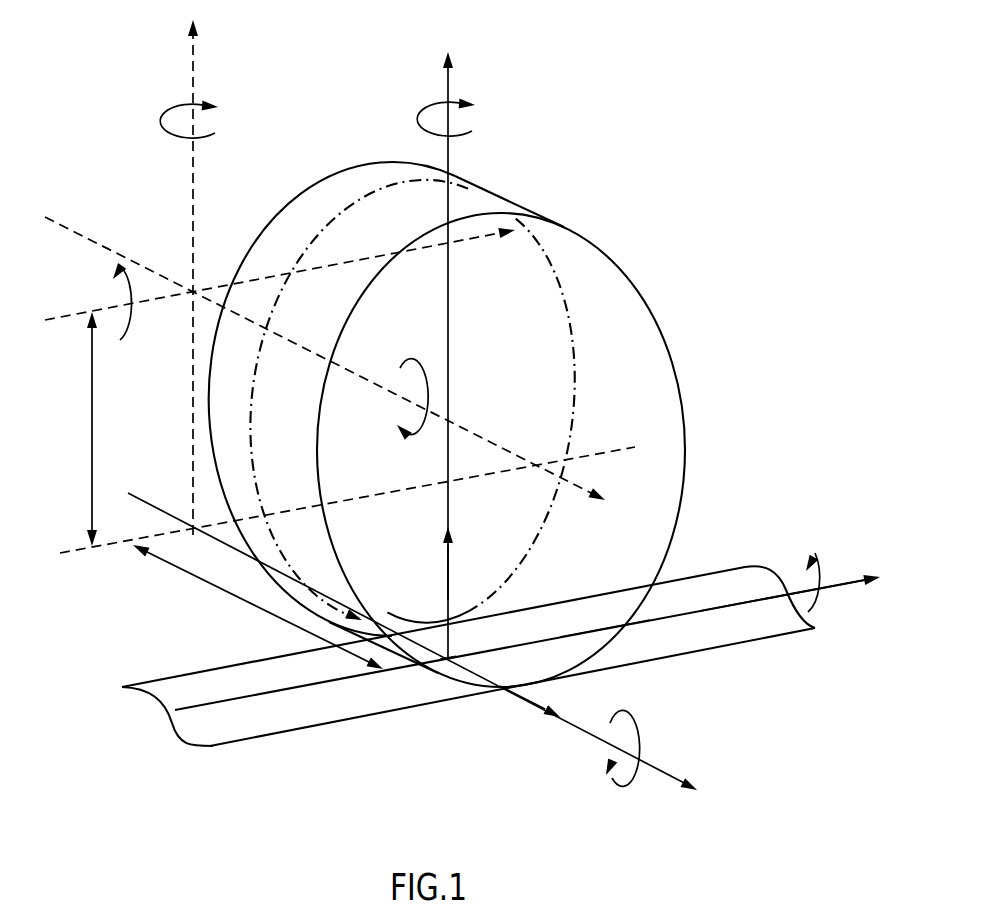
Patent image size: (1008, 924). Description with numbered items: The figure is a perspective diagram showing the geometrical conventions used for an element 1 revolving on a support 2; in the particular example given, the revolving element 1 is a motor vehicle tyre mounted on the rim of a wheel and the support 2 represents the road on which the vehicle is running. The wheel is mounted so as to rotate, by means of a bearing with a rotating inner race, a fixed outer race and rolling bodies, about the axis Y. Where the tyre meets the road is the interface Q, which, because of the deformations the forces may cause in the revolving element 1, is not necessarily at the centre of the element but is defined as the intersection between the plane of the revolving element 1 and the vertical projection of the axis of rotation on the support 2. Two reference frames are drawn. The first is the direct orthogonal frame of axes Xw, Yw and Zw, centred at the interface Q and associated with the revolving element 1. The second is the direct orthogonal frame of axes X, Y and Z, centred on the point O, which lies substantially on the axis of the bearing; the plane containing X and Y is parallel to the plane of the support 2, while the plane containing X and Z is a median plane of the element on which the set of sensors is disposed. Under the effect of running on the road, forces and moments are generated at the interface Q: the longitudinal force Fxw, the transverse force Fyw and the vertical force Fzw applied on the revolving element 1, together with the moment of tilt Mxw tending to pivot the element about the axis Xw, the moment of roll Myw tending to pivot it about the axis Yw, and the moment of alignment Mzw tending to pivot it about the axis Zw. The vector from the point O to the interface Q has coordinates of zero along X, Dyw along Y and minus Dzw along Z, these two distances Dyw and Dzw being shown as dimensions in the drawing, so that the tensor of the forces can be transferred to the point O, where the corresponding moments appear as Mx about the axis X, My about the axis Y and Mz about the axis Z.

The revolving element 1 is at (613, 343).
The support 2 is at (402, 705).
The point O is at (347, 427).
The X axis X is at (301, 272).
The Y axis Y is at (326, 381).
The Z axis Z is at (204, 267).
The interface Q is at (456, 644).
The Xw axis Xw is at (793, 597).
The Yw axis Yw is at (421, 643).
The Zw axis Zw is at (468, 348).
The vertical force Fzw is at (473, 553).
The longitudinal force Fxw is at (605, 620).
The transverse force Fyw is at (531, 718).
The vertical distance Dzw is at (66, 429).
The transverse distance Dyw is at (258, 607).
The moment about X axis Mx is at (100, 300).
The moment about Y axis My is at (404, 387).
The moment about Z axis Mz is at (206, 117).
The moment of tilt Mxw is at (796, 565).
The moment of roll Myw is at (629, 731).
The moment of alignment Mzw is at (478, 116).